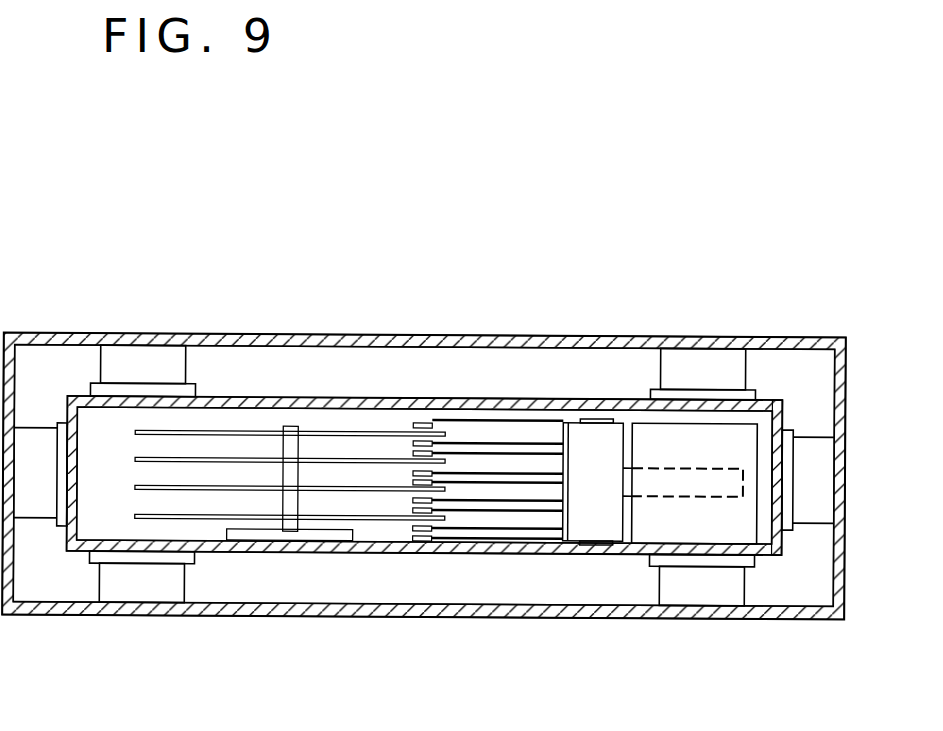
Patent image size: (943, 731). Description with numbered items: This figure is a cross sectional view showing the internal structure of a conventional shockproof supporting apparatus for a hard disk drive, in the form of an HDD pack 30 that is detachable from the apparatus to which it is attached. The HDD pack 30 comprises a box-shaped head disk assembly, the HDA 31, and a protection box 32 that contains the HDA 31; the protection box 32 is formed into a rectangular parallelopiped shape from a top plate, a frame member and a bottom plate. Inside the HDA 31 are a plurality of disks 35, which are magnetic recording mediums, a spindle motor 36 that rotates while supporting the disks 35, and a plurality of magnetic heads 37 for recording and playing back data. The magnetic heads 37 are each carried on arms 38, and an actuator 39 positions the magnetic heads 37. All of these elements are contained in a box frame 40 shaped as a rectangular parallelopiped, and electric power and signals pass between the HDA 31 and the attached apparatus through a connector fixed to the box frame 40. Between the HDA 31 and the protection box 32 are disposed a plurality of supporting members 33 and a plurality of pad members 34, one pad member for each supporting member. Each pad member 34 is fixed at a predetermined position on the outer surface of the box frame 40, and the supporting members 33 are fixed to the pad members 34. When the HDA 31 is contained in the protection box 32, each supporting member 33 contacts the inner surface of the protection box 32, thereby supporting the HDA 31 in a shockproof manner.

The HDD pack 30 is at (488, 320).
The head disk assembly 31 is at (530, 560).
The protection box 32 is at (768, 623).
The supporting members 33 is at (33, 443).
The pad members 34 is at (56, 535).
The disks 35 is at (162, 428).
The spindle motor 36 is at (255, 537).
The magnetic heads 37 is at (417, 427).
The arms 38 is at (443, 420).
The actuator 39 is at (658, 452).
The box frame 40 is at (762, 408).